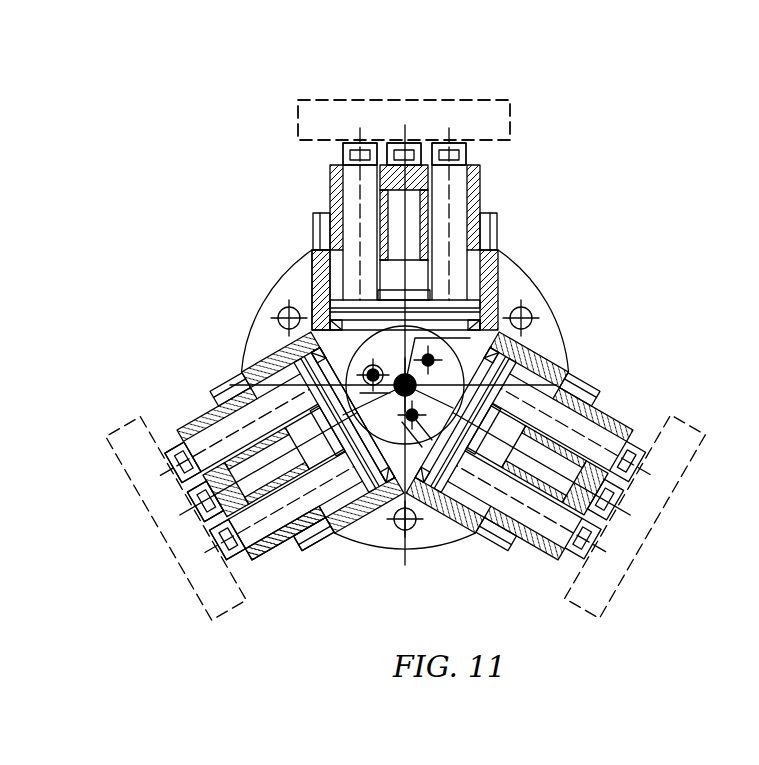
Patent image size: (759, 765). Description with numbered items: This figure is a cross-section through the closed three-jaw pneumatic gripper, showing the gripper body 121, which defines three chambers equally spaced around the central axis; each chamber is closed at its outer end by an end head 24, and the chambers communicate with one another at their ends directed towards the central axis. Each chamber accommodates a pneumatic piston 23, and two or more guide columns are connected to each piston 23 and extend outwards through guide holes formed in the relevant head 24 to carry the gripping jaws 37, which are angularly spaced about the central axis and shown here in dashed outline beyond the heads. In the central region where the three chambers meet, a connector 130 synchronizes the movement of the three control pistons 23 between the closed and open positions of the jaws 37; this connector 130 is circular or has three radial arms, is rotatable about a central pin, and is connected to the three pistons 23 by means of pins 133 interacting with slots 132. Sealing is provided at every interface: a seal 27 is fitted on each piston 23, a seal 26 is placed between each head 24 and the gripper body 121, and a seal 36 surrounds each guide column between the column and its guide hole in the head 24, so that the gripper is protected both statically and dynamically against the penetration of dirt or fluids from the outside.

The pneumatic piston 23 is at (327, 340).
The end head 24 is at (282, 543).
The seal 26 is at (230, 378).
The seal 27 is at (333, 302).
The seal 36 is at (190, 430).
The gripping jaws 37 is at (355, 105).
The gripper body 121 is at (498, 277).
The connector 130 is at (375, 468).
The slots 132 is at (533, 353).
The pins 133 is at (473, 310).